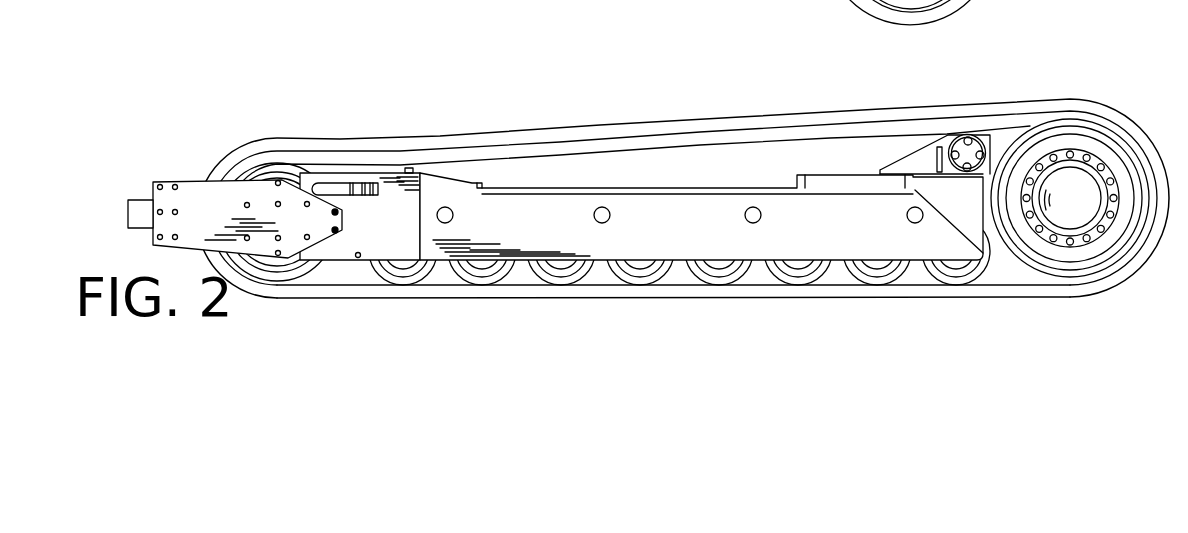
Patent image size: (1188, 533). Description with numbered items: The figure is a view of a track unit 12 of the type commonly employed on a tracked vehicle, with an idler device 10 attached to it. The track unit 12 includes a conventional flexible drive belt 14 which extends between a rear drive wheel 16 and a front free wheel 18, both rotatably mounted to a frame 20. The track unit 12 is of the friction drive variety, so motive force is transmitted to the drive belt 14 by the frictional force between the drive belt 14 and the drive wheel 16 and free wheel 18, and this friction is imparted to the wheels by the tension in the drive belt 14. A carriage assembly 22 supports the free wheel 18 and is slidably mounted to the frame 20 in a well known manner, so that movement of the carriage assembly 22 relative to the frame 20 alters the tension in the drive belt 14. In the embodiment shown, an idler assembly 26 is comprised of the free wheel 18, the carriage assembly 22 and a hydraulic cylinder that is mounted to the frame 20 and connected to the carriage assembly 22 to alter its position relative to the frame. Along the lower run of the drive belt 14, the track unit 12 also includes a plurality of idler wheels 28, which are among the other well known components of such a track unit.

The idler device 10 is at (322, 100).
The track unit 12 is at (521, 118).
The flexible drive belt 14 is at (622, 123).
The rear drive wheel 16 is at (1078, 182).
The front free wheel 18 is at (253, 138).
The frame 20 is at (701, 216).
The carriage assembly 22 is at (340, 187).
The idler assembly 26 is at (285, 126).
The idler wheels 28 is at (623, 287).